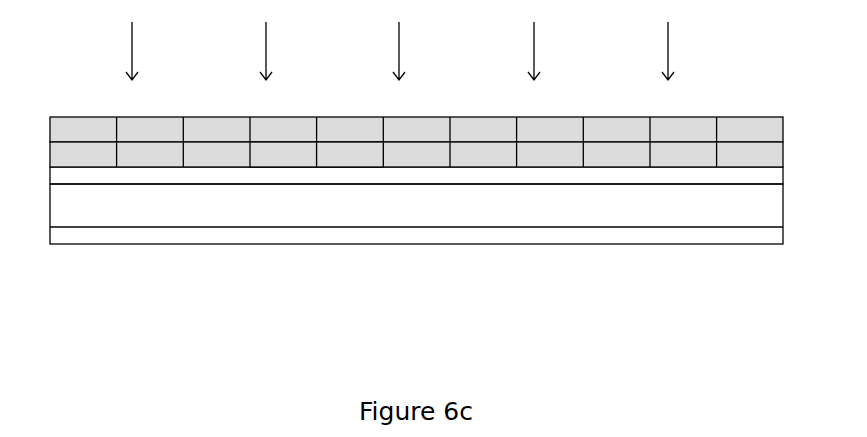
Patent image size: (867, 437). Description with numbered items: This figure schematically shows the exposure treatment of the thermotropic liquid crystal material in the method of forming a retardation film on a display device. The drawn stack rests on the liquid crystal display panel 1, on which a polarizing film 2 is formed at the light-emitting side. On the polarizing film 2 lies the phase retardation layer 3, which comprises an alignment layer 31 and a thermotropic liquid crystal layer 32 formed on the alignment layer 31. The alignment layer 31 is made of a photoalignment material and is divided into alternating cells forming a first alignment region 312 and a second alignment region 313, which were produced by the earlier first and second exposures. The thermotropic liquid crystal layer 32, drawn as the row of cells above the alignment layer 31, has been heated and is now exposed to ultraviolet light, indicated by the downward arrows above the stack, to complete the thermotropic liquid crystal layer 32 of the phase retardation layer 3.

The liquid crystal display panel 1 is at (490, 200).
The polarizing film 2 is at (414, 177).
The phase retardation layer 3 is at (416, 247).
The alignment layer 31 is at (416, 236).
The thermotropic liquid crystal layer 32 is at (223, 129).
The first alignment region 312 is at (360, 153).
The second alignment region 313 is at (280, 153).